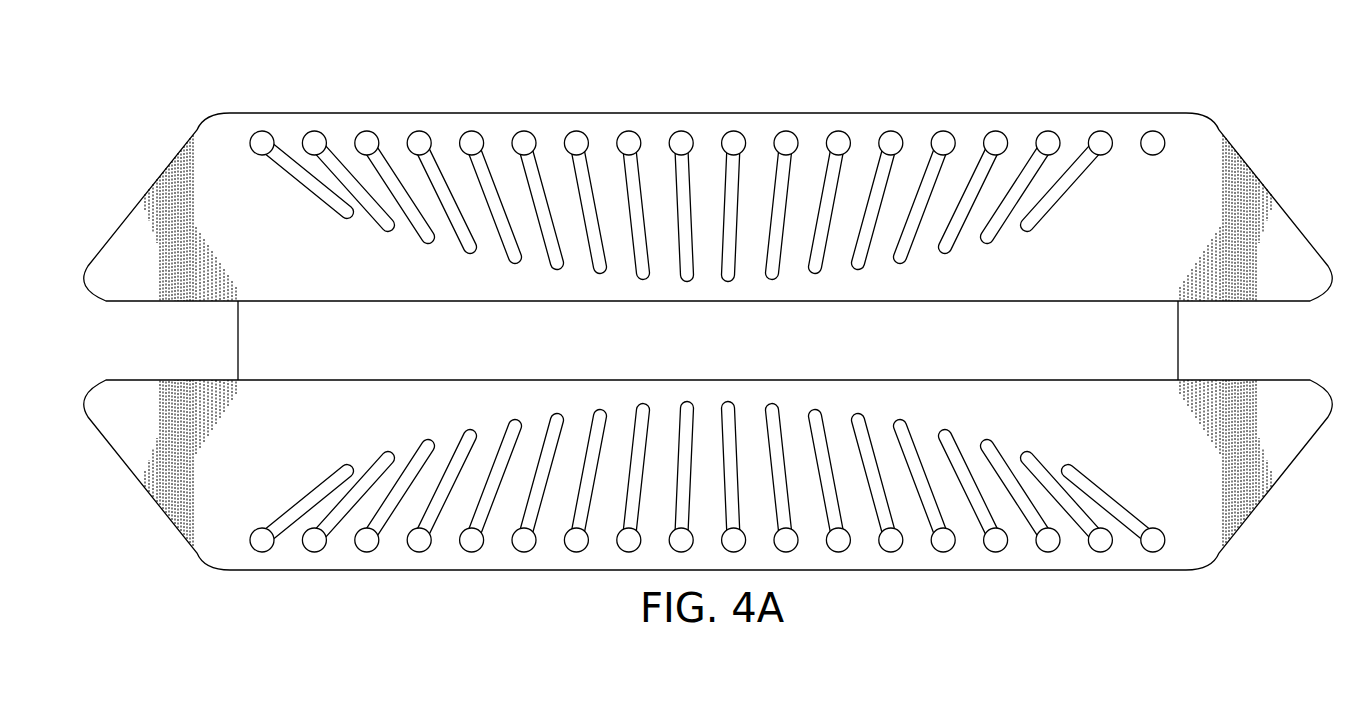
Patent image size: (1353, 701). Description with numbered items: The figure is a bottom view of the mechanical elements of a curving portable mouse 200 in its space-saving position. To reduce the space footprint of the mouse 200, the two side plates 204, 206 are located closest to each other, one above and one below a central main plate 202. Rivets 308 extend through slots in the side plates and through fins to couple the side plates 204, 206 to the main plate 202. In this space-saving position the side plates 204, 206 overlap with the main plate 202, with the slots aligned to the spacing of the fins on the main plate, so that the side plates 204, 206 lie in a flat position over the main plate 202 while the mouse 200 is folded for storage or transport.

The mouse 200 is at (503, 75).
The main plate 202 is at (236, 352).
The side plate 204 is at (708, 182).
The side plate 206 is at (708, 502).
The rivet 308 is at (1040, 129).